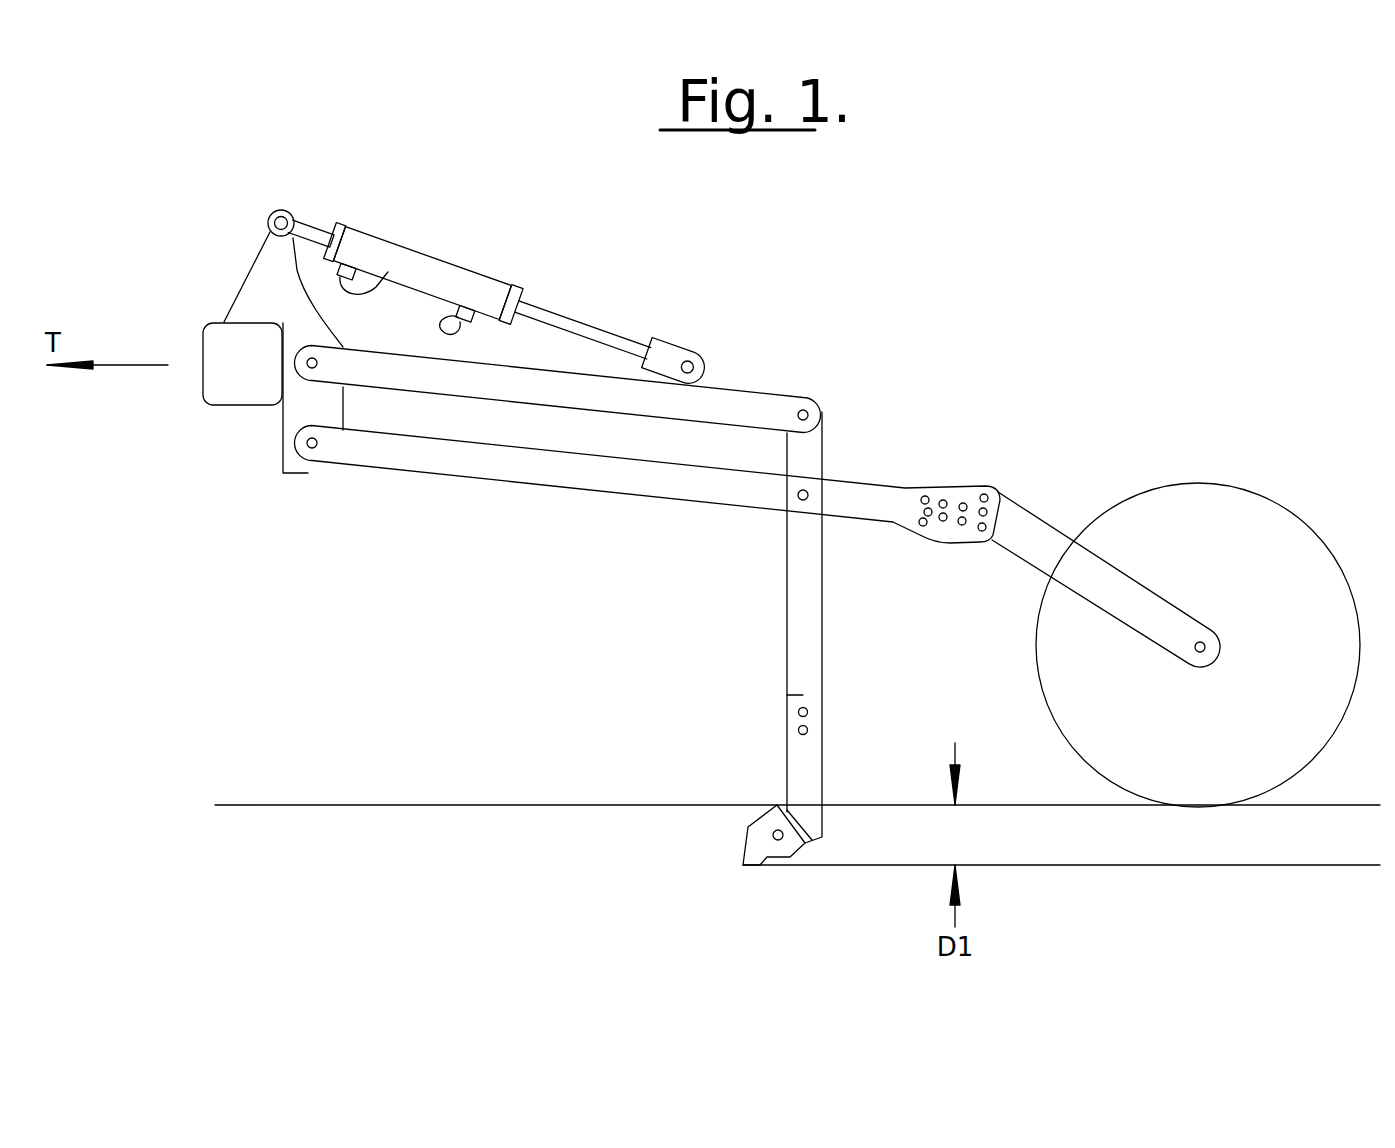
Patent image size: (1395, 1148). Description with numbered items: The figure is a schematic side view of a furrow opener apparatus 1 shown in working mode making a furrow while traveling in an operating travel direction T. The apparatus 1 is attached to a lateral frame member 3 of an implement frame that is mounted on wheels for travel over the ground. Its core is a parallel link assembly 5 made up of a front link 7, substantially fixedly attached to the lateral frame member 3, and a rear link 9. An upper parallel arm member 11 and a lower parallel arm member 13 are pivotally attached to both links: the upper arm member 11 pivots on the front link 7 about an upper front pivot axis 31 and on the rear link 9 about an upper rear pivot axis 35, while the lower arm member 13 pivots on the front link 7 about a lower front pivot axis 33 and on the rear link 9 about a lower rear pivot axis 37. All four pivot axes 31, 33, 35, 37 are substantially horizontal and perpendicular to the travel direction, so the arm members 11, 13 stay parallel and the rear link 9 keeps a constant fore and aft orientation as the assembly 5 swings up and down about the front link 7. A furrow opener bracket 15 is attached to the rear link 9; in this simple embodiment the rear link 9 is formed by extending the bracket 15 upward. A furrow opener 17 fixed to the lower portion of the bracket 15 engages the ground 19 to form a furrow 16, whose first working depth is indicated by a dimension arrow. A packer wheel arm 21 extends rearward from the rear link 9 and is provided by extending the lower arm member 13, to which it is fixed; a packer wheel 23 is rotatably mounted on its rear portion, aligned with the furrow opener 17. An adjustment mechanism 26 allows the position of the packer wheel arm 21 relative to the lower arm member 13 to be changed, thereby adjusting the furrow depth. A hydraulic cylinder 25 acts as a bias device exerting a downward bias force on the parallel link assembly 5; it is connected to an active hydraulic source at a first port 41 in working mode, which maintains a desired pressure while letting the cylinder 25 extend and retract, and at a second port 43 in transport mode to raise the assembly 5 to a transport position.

The furrow opener apparatus 1 is at (763, 327).
The lateral frame member 3 is at (203, 368).
The parallel link assembly 5 is at (485, 520).
The front link 7 is at (303, 474).
The rear link 9 is at (825, 455).
The upper parallel arm member 11 is at (460, 398).
The lower parallel arm member 13 is at (637, 497).
The furrow opener bracket 15 is at (823, 743).
The furrow 16 is at (1120, 838).
The furrow opener 17 is at (745, 855).
The ground 19 is at (430, 805).
The packer wheel arm 21 is at (1042, 520).
The packer wheel 23 is at (1240, 490).
The hydraulic cylinder 25 is at (358, 229).
The adjustment mechanism 26 is at (975, 488).
The upper front pivot axis 31 is at (318, 376).
The lower front pivot axis 33 is at (308, 444).
The upper rear pivot axis 35 is at (808, 413).
The lower rear pivot axis 37 is at (800, 496).
The first port 41 is at (388, 273).
The second port 43 is at (458, 297).